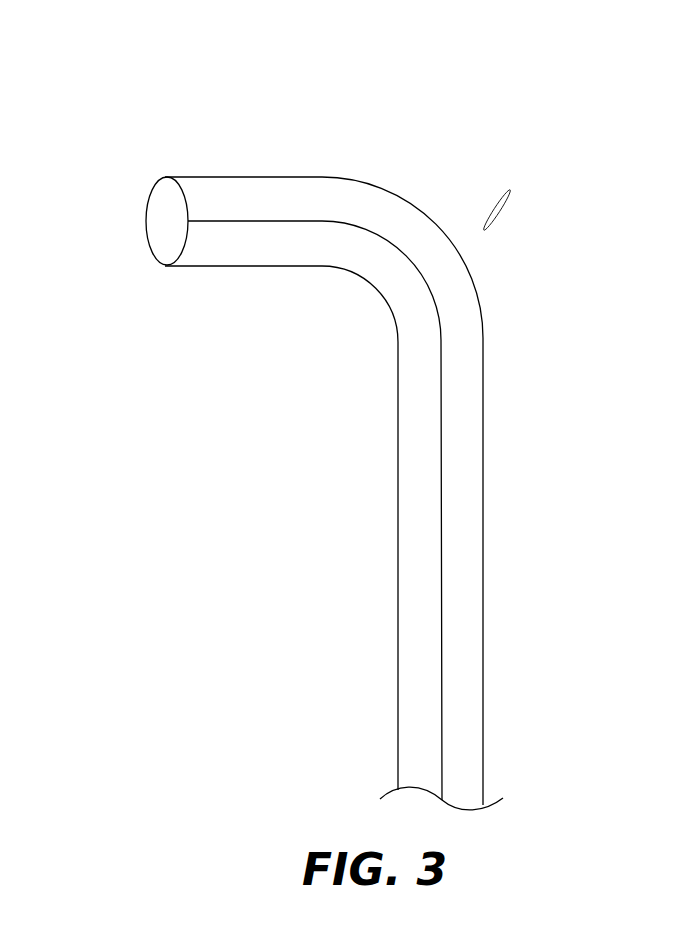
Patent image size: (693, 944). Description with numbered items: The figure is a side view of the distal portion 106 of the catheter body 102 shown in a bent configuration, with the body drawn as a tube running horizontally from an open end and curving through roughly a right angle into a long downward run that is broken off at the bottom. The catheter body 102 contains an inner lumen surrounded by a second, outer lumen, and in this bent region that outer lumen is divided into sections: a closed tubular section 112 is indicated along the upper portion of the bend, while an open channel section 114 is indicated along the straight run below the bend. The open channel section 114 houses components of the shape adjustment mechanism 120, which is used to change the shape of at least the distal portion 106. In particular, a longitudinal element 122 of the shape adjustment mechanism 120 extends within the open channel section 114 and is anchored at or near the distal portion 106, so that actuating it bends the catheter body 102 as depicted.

The catheter body 102 is at (358, 76).
The distal portion 106 is at (156, 132).
The closed tubular section 112 is at (393, 233).
The open channel section 114 is at (443, 442).
The shape adjustment mechanism 120 is at (453, 278).
The longitudinal element 122 is at (472, 299).